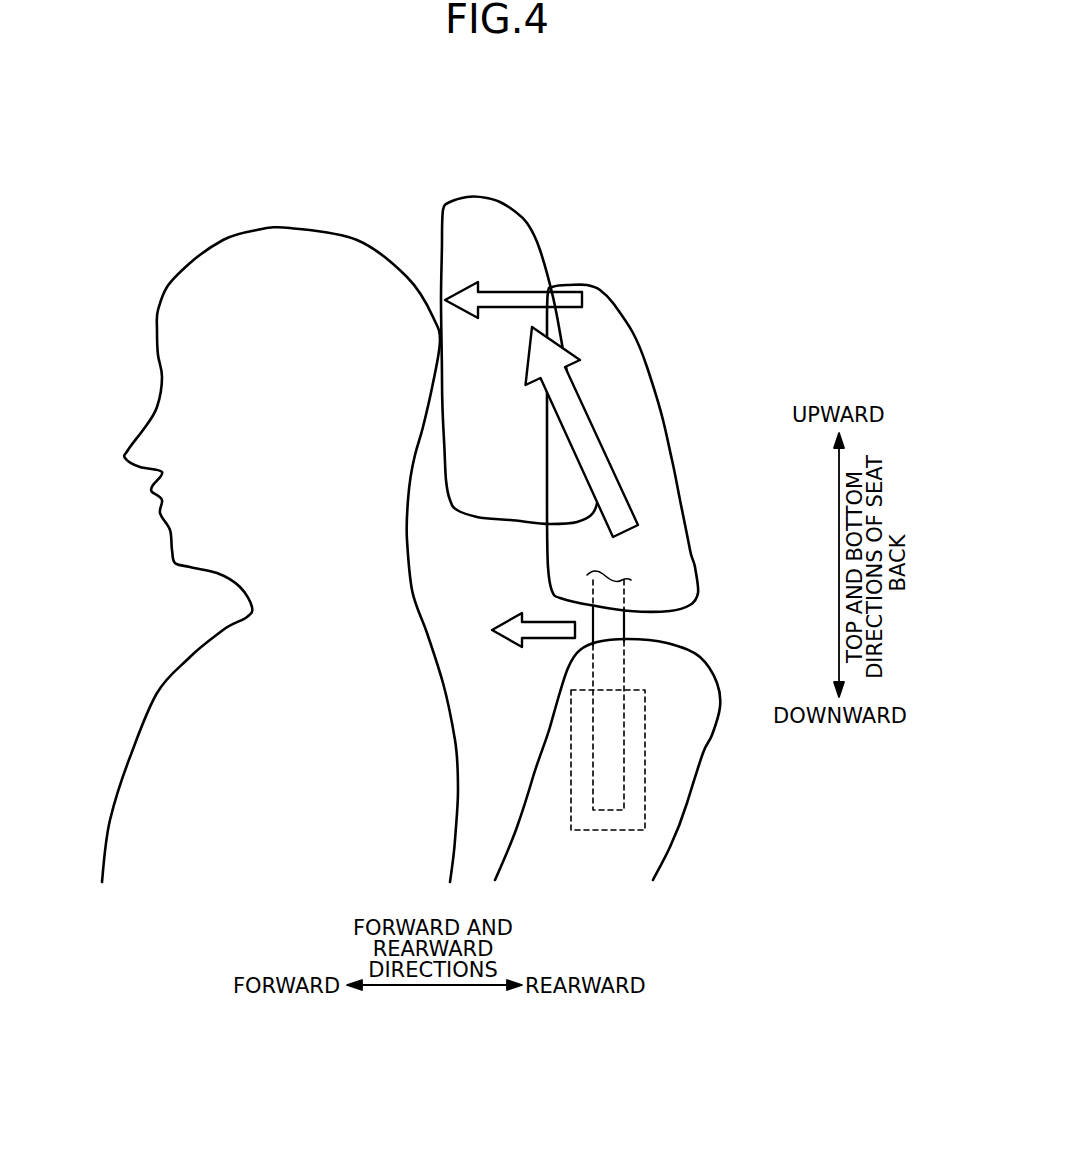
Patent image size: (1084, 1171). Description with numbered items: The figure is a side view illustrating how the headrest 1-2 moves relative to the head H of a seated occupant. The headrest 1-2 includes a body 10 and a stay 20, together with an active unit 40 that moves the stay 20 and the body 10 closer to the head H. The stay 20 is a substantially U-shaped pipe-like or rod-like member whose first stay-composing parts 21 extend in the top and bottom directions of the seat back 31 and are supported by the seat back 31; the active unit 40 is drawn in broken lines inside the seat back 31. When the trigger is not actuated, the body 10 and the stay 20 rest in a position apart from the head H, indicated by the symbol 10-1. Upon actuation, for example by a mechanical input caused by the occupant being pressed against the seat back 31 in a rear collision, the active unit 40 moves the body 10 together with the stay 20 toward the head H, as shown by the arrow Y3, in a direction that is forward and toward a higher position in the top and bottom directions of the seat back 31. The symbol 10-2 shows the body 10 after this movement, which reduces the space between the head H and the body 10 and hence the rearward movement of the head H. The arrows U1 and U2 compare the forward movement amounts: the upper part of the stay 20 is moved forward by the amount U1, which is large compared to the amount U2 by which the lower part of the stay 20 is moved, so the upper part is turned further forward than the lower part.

The head H is at (290, 201).
The headrest 1-2 is at (604, 456).
The body 10 is at (586, 357).
The body in stopped position 10-1 is at (645, 340).
The body in moved position 10-2 is at (523, 220).
The stay 20 is at (677, 690).
The first stay-composing part 21 is at (633, 637).
The seat back 31 is at (687, 802).
The active unit 40 is at (645, 750).
The arrow indicating movement of body and stay Y3 is at (622, 487).
The forward movement amount of upper stay part U1 is at (513, 292).
The forward movement amount of lower stay part U2 is at (545, 638).